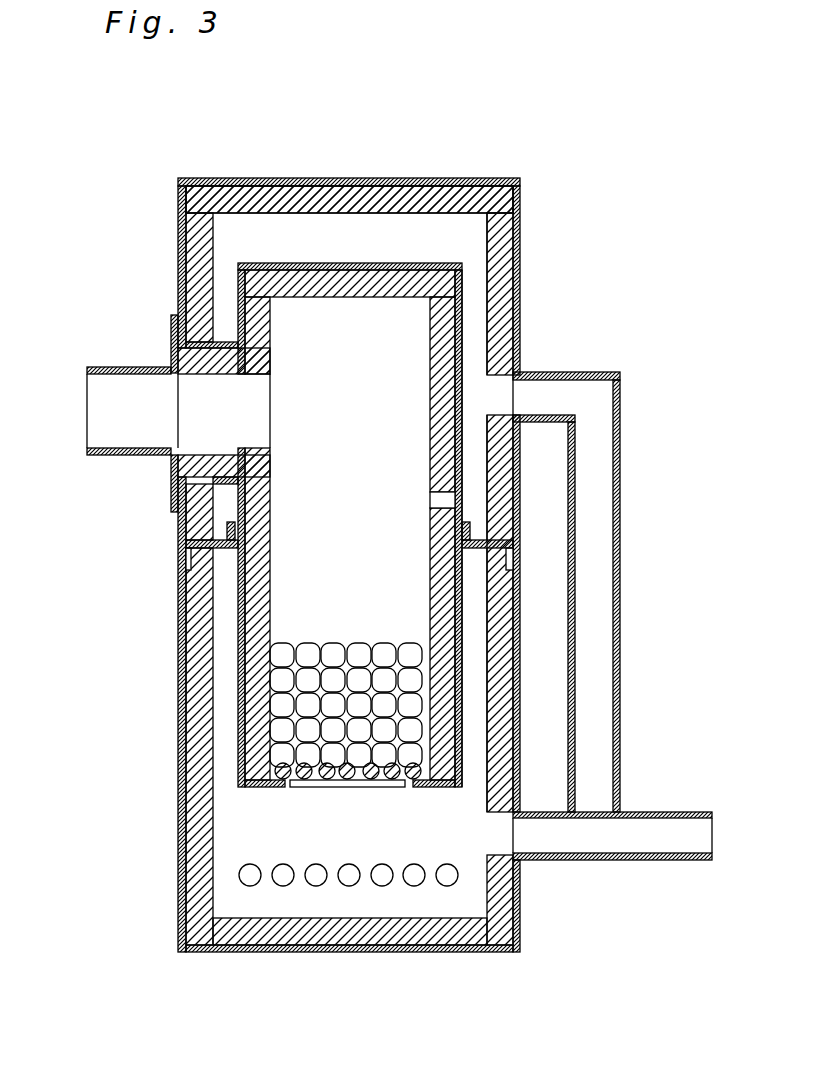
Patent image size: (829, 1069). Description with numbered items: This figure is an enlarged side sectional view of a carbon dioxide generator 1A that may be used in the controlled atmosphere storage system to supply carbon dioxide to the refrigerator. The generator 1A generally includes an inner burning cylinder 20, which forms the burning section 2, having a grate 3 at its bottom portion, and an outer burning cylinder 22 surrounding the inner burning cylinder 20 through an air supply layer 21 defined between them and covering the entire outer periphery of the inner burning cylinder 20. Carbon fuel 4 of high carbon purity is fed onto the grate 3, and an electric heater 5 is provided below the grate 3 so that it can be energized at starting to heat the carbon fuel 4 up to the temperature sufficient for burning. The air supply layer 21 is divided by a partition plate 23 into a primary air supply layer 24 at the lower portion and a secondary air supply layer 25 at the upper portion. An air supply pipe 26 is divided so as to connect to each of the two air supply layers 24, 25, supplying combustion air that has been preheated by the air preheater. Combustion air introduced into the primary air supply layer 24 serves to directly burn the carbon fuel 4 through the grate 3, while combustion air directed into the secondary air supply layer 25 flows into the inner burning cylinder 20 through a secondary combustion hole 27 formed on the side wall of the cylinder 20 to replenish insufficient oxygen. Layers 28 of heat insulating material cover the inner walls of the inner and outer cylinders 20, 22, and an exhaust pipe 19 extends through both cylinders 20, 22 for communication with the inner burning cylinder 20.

The carbon dioxide generator 1A is at (500, 140).
The burning section 2 is at (330, 428).
The grate 3 is at (355, 787).
The carbon fuel 4 is at (312, 655).
The electric heater 5 is at (252, 878).
The exhaust pipe 19 is at (136, 455).
The inner burning cylinder 20 is at (240, 621).
The air supply layer 21 is at (472, 317).
The outer burning cylinder 22 is at (178, 240).
The partition plate 23 is at (187, 557).
The primary air supply layer 24 is at (468, 755).
The secondary air supply layer 25 is at (470, 378).
The air supply pipe 26 is at (660, 812).
The secondary combustion hole 27 is at (440, 499).
The heat insulating material layer 28 is at (352, 195).